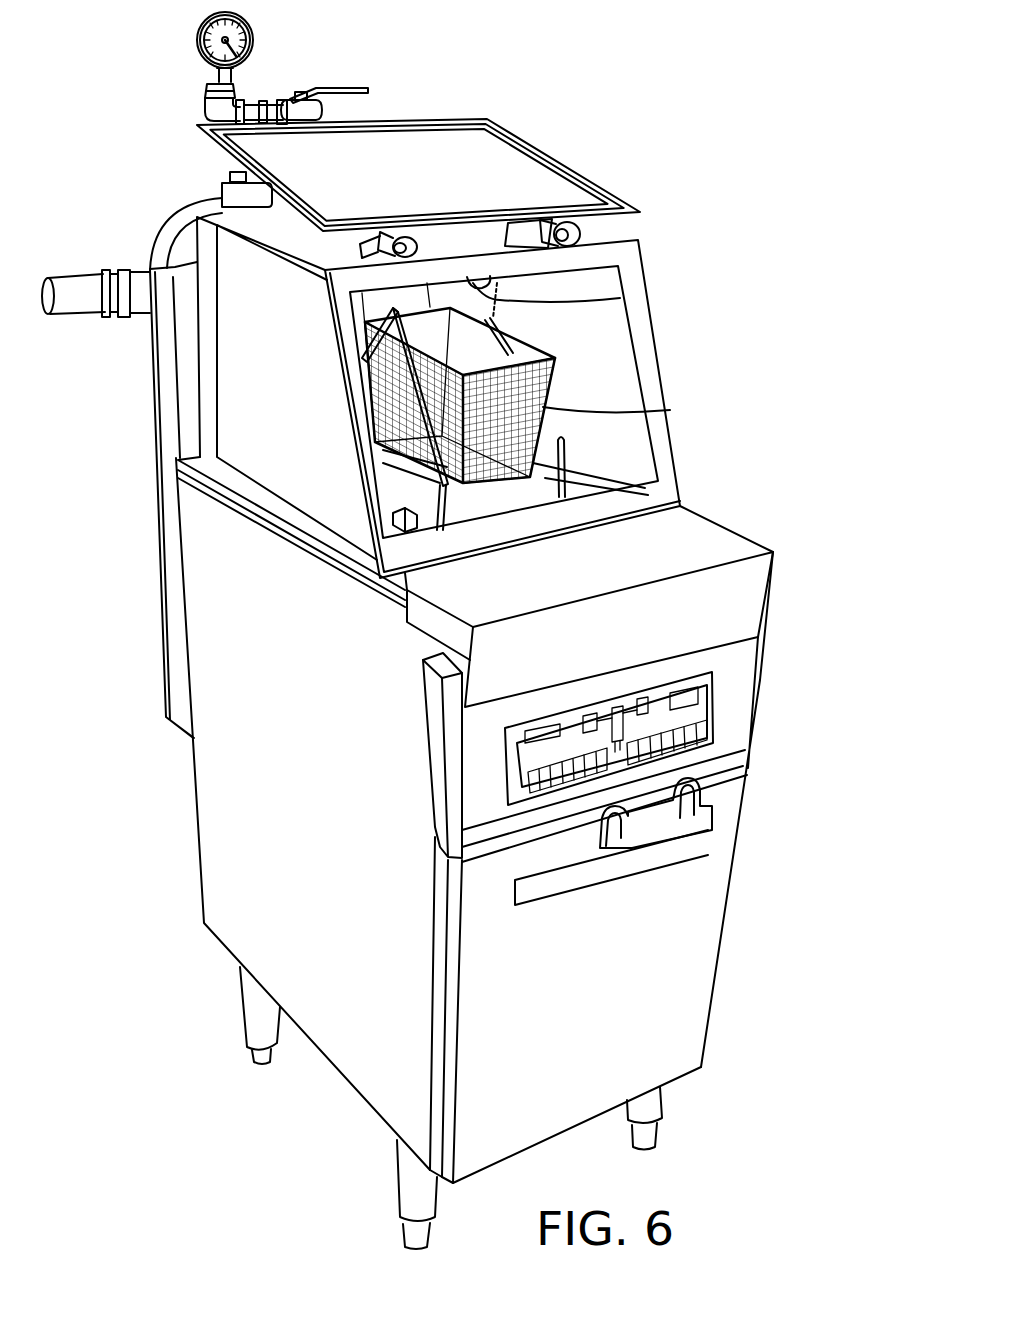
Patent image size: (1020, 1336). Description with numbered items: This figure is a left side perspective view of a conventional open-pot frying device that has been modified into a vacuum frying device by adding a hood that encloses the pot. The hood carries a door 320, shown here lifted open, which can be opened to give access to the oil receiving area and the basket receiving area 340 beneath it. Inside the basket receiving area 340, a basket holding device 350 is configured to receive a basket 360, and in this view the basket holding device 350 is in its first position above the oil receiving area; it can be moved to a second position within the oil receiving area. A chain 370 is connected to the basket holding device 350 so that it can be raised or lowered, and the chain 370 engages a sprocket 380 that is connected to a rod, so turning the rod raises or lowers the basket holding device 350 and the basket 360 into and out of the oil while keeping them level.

The door 320 is at (523, 173).
The basket receiving area 340 is at (612, 343).
The basket holding device 350 is at (375, 443).
The basket 360 is at (670, 410).
The chain 370 is at (620, 298).
The sprocket 380 is at (467, 277).